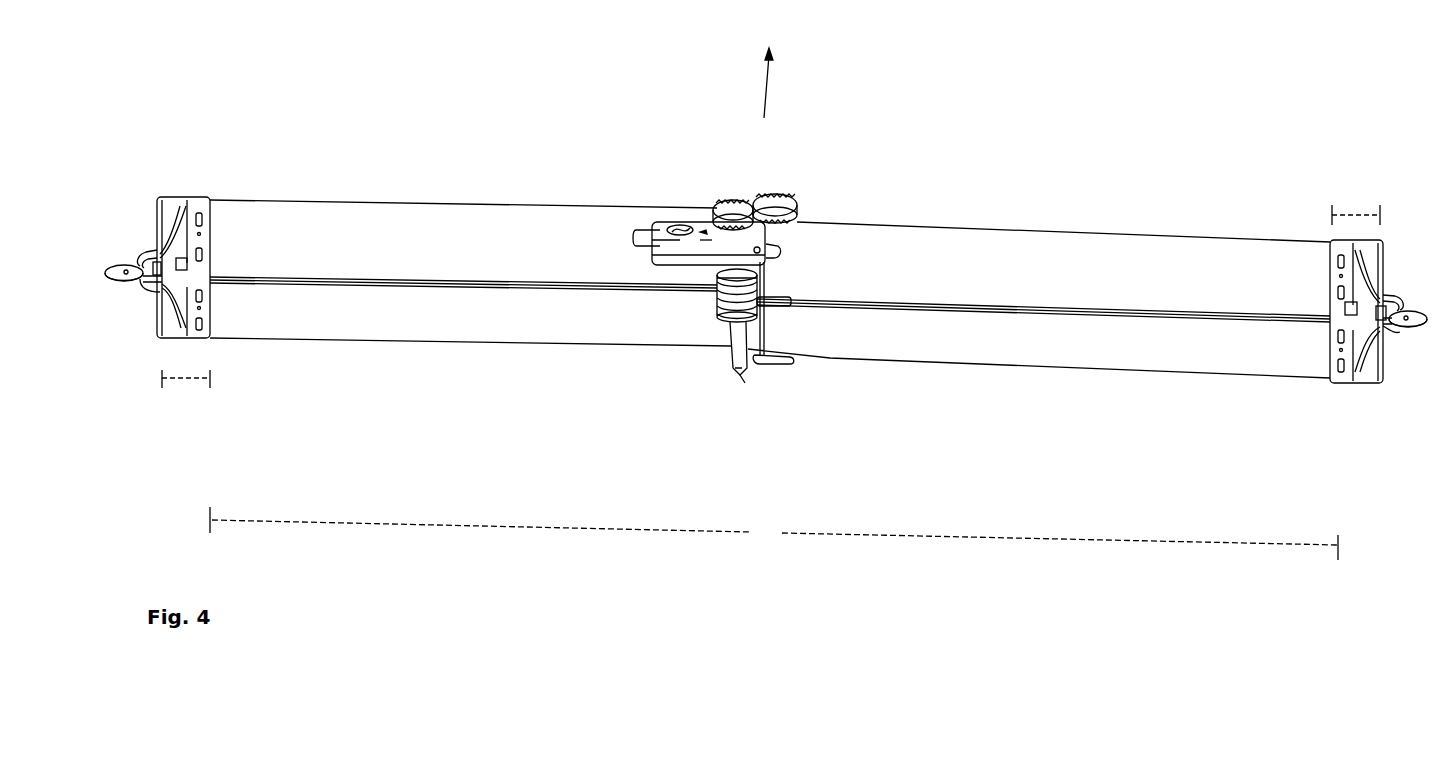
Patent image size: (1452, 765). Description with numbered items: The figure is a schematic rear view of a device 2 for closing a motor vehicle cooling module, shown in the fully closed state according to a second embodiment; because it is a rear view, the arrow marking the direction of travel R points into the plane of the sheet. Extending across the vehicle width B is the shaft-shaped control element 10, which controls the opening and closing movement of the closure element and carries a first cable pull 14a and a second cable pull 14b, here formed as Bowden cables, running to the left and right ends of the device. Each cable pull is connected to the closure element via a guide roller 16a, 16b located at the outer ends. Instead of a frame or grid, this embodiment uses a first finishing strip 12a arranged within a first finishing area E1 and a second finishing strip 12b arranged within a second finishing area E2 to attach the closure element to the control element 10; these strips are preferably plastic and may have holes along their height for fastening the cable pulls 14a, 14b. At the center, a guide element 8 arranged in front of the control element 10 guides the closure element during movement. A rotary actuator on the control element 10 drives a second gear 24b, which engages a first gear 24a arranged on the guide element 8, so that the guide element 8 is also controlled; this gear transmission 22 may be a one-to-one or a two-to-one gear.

The device 2 is at (1186, 464).
The guide element 8 is at (771, 278).
The control element 10 is at (745, 372).
The first finishing strip 12a is at (188, 213).
The second finishing strip 12b is at (1352, 381).
The first cable pull 14a is at (421, 290).
The second cable pull 14b is at (1066, 318).
The guide roller 16a is at (125, 283).
The guide roller 16b is at (1407, 309).
The gear transmission 22 is at (800, 242).
The first gear 24a is at (769, 196).
The second gear 24b is at (728, 204).
The direction of travel R is at (770, 66).
The vehicle width B is at (774, 533).
The first finishing area E1 is at (186, 391).
The second finishing area E2 is at (1356, 207).